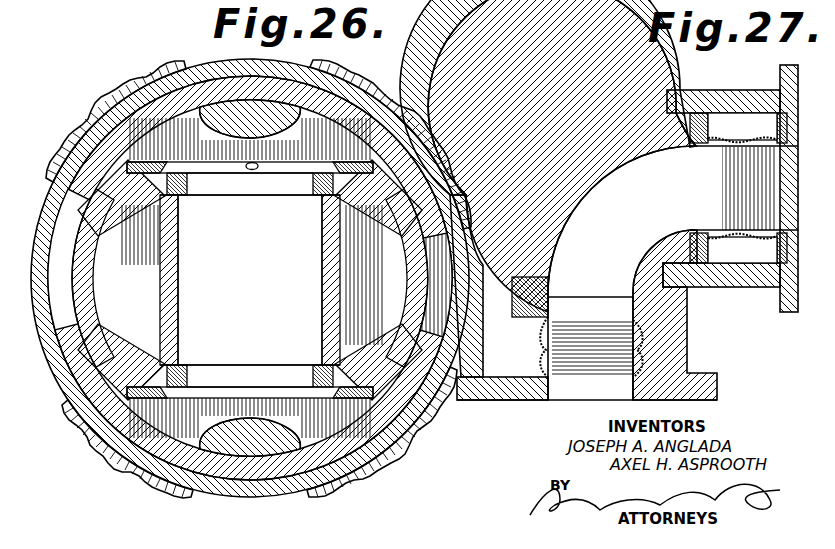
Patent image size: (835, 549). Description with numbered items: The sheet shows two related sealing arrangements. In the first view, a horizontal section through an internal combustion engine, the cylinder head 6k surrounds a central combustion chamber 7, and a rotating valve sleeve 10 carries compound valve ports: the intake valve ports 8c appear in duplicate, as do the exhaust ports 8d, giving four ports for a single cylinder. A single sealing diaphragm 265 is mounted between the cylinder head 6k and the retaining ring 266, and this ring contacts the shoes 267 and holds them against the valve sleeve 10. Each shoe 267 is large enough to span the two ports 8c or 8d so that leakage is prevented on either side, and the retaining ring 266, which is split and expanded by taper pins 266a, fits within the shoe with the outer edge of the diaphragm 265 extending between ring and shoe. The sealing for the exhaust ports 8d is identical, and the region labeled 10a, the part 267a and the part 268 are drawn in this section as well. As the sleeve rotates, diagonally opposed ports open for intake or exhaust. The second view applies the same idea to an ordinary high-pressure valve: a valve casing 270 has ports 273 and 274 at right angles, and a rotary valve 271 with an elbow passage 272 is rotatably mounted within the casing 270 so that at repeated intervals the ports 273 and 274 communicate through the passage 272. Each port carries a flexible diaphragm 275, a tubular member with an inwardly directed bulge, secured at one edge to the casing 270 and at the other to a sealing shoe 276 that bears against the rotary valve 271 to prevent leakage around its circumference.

In FIG. 26, the intake valve ports 8c is at (155, 80).
In FIG. 26, the exhaust ports 8d is at (130, 472).
In FIG. 26, the valve sleeve 10 is at (403, 412).
In FIG. 26, the casing window 10a is at (448, 318).
In FIG. 26, the cylinder head 6k is at (176, 284).
In FIG. 26, the central combustion chamber 7 is at (250, 280).
In FIG. 26, the sealing diaphragm 265 is at (148, 373).
In FIG. 26, the retaining ring 266 is at (176, 170).
In FIG. 26, the taper pins 266a is at (257, 170).
In FIG. 26, the shoes 267 is at (128, 157).
In FIG. 26, the wedge piece 267a is at (418, 152).
In FIG. 26, the lobe member 268 is at (250, 418).
In FIG. 27, the valve casing 270 is at (577, 40).
In FIG. 27, the rotary valve 271 is at (585, 172).
In FIG. 27, the elbow passage 272 is at (622, 219).
In FIG. 27, the port 273 is at (573, 387).
In FIG. 27, the port 274 is at (790, 213).
In FIG. 27, the flexible diaphragm 275 is at (642, 347).
In FIG. 27, the sealing shoe 276 is at (695, 125).